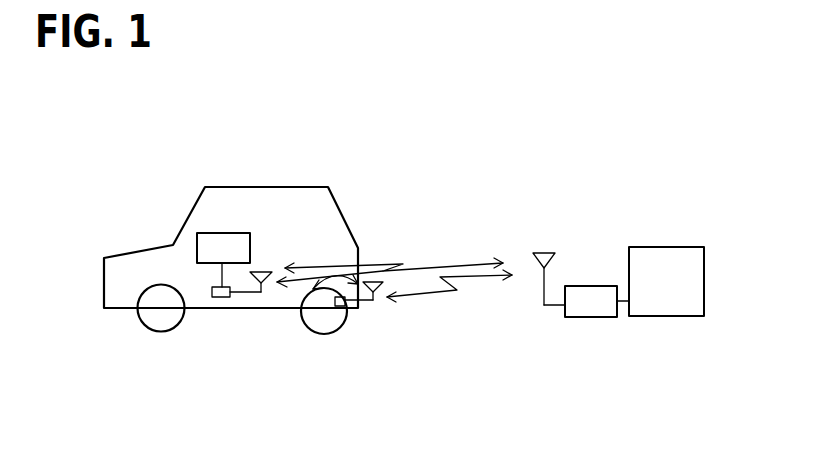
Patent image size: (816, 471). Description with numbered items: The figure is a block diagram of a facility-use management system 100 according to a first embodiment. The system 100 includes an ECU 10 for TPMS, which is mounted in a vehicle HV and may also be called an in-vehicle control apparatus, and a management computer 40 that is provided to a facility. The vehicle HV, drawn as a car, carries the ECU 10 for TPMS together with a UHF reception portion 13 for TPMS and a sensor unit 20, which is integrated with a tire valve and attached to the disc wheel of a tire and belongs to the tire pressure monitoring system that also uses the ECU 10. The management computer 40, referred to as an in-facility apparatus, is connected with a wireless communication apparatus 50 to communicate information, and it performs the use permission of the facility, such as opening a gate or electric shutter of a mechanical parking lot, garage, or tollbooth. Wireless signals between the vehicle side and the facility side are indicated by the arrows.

The facility-use management system 100 is at (726, 93).
The vehicle HV is at (238, 188).
The ECU for TPMS 10 is at (207, 232).
The UHF reception portion for TPMS 13 is at (226, 298).
The sensor unit 20 is at (340, 306).
The management computer 40 is at (685, 247).
The wireless communication apparatus 50 is at (580, 286).